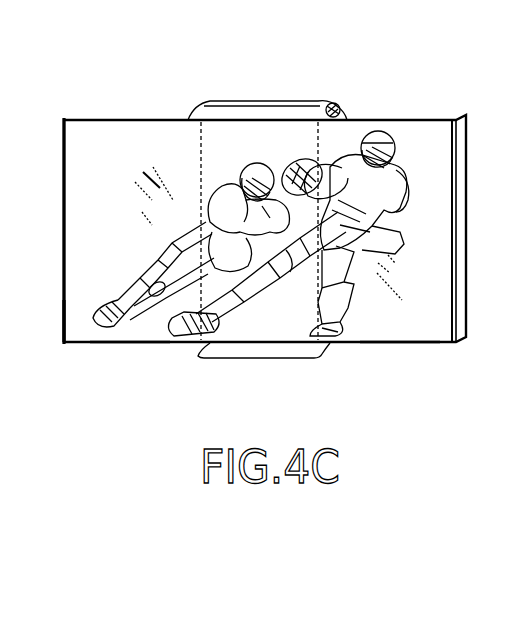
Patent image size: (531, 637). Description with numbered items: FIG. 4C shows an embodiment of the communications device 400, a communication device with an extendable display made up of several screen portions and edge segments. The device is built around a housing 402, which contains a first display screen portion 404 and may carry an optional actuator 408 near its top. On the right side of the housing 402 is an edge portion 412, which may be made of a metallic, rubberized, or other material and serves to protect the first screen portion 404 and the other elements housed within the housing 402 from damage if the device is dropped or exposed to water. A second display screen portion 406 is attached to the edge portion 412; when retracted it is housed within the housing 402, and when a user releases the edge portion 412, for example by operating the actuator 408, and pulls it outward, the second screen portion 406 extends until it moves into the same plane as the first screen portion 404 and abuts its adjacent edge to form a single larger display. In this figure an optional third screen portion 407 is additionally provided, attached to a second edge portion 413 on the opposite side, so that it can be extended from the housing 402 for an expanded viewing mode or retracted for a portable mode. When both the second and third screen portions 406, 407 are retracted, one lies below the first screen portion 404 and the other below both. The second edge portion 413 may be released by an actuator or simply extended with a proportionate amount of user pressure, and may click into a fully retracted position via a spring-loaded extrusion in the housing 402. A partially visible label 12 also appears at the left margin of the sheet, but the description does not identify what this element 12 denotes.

The communications device 400 is at (78, 400).
The housing 402 is at (276, 117).
The first display screen portion 404 is at (222, 332).
The second display screen portion 406 is at (403, 330).
The third screen portion 407 is at (128, 344).
The actuator 408 is at (340, 108).
The edge portion 412 is at (460, 318).
The second edge portion 413 is at (63, 330).
The display 12 is at (14, 247).